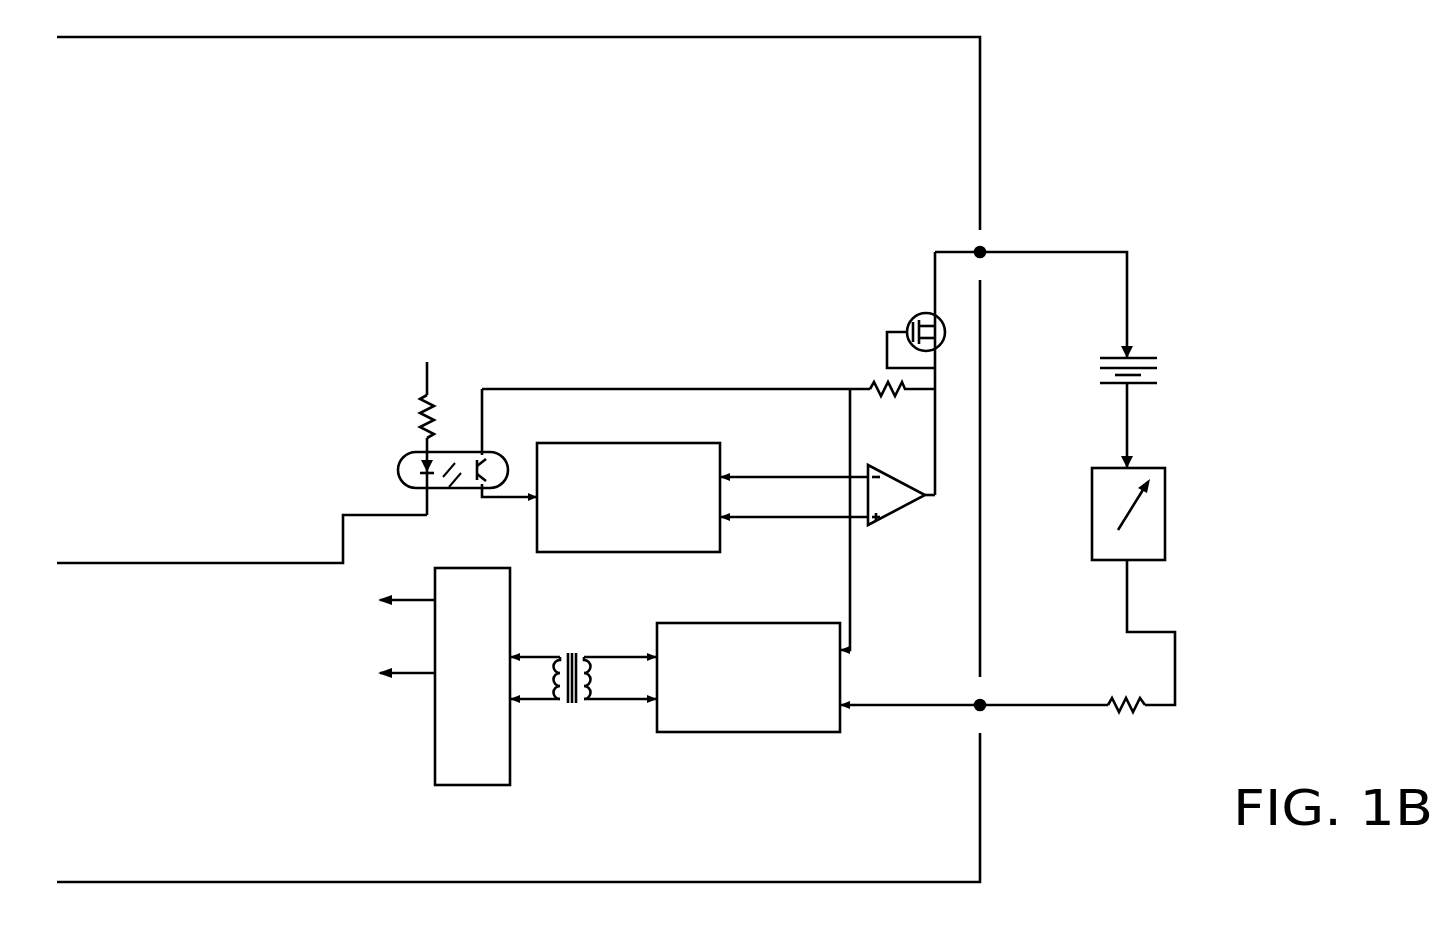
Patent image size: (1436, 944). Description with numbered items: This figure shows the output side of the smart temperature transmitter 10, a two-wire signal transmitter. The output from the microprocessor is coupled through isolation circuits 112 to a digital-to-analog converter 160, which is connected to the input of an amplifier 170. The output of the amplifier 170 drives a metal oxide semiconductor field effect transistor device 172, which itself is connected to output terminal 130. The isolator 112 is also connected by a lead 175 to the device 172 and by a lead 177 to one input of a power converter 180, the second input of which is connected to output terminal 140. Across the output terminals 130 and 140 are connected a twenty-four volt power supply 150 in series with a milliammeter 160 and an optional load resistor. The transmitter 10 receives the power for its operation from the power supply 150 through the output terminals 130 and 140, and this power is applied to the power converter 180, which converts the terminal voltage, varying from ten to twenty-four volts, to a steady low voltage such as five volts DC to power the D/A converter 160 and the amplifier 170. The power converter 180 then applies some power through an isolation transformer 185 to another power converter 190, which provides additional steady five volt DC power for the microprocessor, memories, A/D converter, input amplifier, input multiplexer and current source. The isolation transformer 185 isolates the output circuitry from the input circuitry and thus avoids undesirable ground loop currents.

The smart temperature transmitter 10 is at (583, 41).
The isolation circuits 112 is at (460, 491).
The output terminal 130 is at (982, 250).
The output terminal 140 is at (978, 703).
The 24 volt power supply 150 is at (1118, 358).
The digital-to-analog converter 160 is at (627, 552).
The amplifier 170 is at (893, 520).
The metal oxide semiconductor field effect transistor device 172 is at (910, 320).
The lead 175 is at (578, 389).
The lead 177 is at (850, 612).
The power converter 180 is at (765, 735).
The isolation transformer 185 is at (568, 706).
The power converter 190 is at (460, 787).